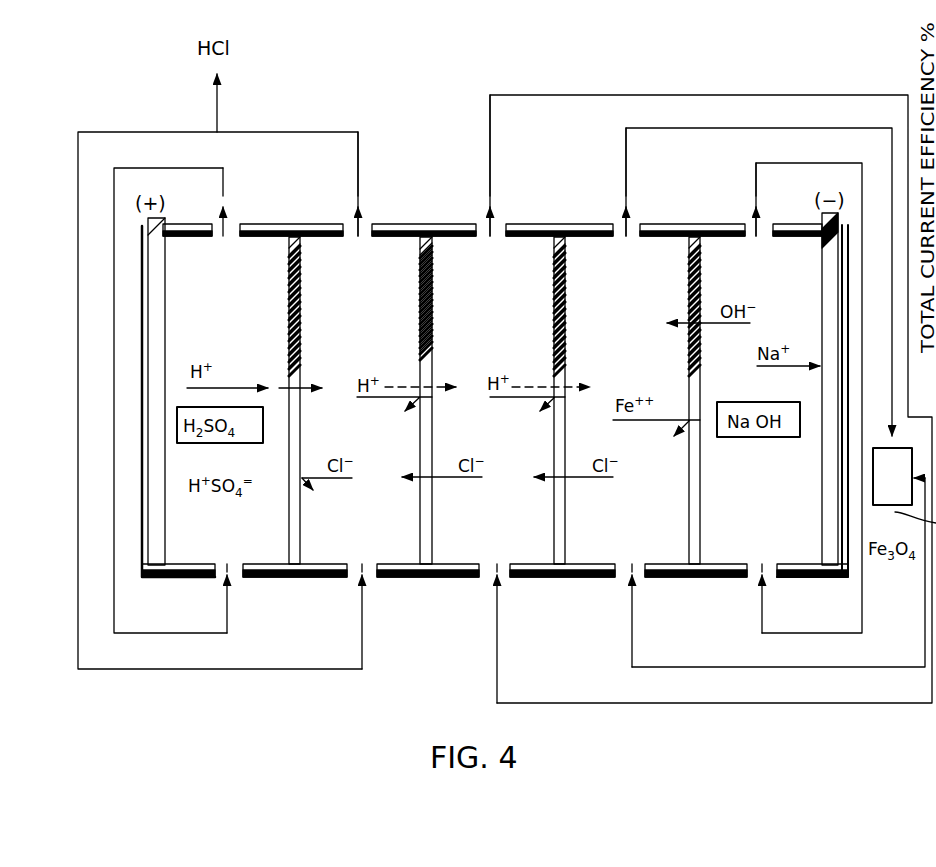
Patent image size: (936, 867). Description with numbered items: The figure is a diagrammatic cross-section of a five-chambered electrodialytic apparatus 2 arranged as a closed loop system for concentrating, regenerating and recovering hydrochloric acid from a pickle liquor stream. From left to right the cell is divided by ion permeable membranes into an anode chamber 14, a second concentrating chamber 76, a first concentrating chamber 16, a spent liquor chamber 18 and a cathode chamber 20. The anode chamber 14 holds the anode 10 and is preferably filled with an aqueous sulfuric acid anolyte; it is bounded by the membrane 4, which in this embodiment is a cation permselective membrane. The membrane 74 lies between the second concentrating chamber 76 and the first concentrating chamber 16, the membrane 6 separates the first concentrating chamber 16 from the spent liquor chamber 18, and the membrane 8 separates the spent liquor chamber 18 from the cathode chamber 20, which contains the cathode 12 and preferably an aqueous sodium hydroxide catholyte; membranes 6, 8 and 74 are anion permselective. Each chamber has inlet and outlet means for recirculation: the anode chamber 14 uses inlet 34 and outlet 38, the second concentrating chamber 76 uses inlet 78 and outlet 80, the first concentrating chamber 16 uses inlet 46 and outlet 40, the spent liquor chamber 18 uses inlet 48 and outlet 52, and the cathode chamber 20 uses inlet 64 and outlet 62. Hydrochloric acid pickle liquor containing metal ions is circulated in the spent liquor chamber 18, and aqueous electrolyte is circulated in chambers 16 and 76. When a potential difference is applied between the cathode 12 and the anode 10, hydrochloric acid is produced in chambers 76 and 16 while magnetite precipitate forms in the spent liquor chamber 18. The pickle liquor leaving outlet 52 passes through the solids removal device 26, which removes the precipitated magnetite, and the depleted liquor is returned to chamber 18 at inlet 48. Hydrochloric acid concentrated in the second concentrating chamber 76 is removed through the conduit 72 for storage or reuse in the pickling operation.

The electrodialytic apparatus 2 is at (142, 445).
The ion permeable membrane 4 is at (288, 268).
The ion permeable membrane 6 is at (553, 270).
The ion permeable membrane 8 is at (688, 272).
The anode 10 is at (165, 296).
The cathode 12 is at (822, 268).
The anode chamber 14 is at (196, 554).
The first concentrating chamber 16 is at (472, 553).
The spent liquor chamber 18 is at (602, 552).
The cathode chamber 20 is at (740, 550).
The solids removal device 26 is at (905, 490).
The inlet 34 is at (227, 608).
The outlet 38 is at (225, 222).
The outlet 40 is at (491, 180).
The inlet 46 is at (498, 628).
The inlet 48 is at (633, 628).
The outlet 52 is at (627, 186).
The outlet 62 is at (756, 215).
The inlet 64 is at (763, 613).
The conduit 72 is at (217, 98).
The ion permeable membrane 74 is at (420, 276).
The second concentrating chamber 76 is at (343, 553).
The inlet 78 is at (365, 625).
The outlet 80 is at (360, 219).